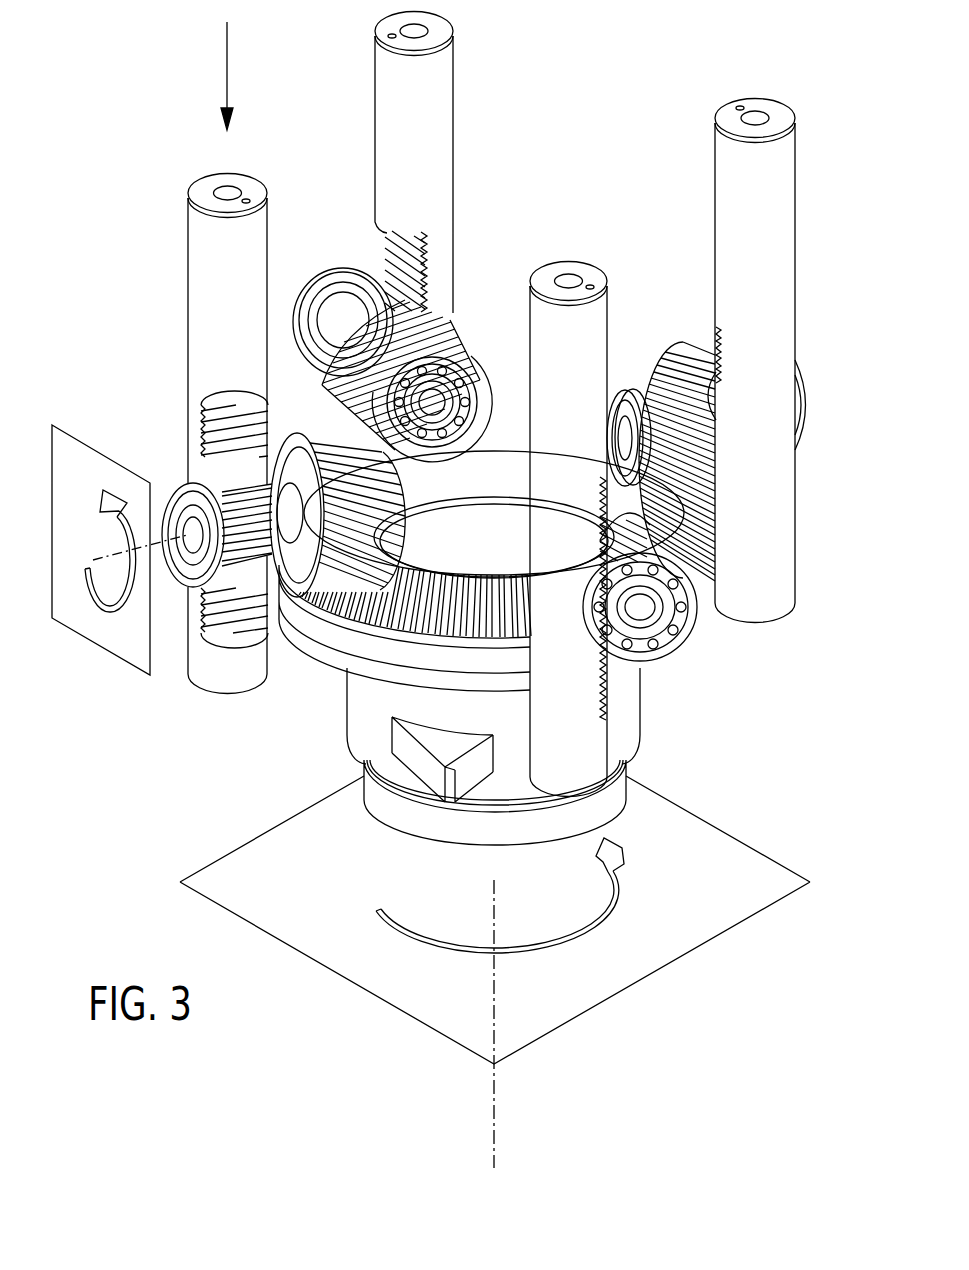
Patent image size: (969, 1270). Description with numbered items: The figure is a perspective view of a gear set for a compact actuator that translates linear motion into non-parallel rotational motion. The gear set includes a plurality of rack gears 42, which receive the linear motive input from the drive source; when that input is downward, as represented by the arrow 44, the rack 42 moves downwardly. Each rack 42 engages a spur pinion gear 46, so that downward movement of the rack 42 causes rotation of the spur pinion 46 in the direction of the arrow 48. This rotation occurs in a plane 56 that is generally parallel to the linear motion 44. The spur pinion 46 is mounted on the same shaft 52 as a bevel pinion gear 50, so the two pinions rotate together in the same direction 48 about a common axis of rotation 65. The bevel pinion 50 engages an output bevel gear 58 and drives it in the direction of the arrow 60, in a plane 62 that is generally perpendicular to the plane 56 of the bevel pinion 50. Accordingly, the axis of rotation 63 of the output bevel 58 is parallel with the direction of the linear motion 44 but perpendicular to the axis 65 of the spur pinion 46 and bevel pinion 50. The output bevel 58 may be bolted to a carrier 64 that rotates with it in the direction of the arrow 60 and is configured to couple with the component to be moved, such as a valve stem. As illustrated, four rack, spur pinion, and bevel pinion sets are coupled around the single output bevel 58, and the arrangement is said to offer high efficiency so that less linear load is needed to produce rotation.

The rack gear 42 is at (198, 253).
The arrow indicating downward linear motive input 44 is at (230, 72).
The spur pinion gear 46 is at (332, 288).
The arrow indicating rotation of spur pinion 48 is at (110, 622).
The bevel pinion gear 50 is at (460, 332).
The shaft 52 is at (800, 365).
The plane of rotation of spur pinion 56 is at (100, 455).
The output bevel gear 58 is at (487, 428).
The arrow indicating rotation of output bevel 60 is at (617, 905).
The plane of rotation of output bevel 62 is at (724, 932).
The axis of rotation of output bevel 63 is at (497, 1122).
The carrier 64 is at (641, 705).
The axis of rotation of spur pinion and bevel pinion 65 is at (110, 555).